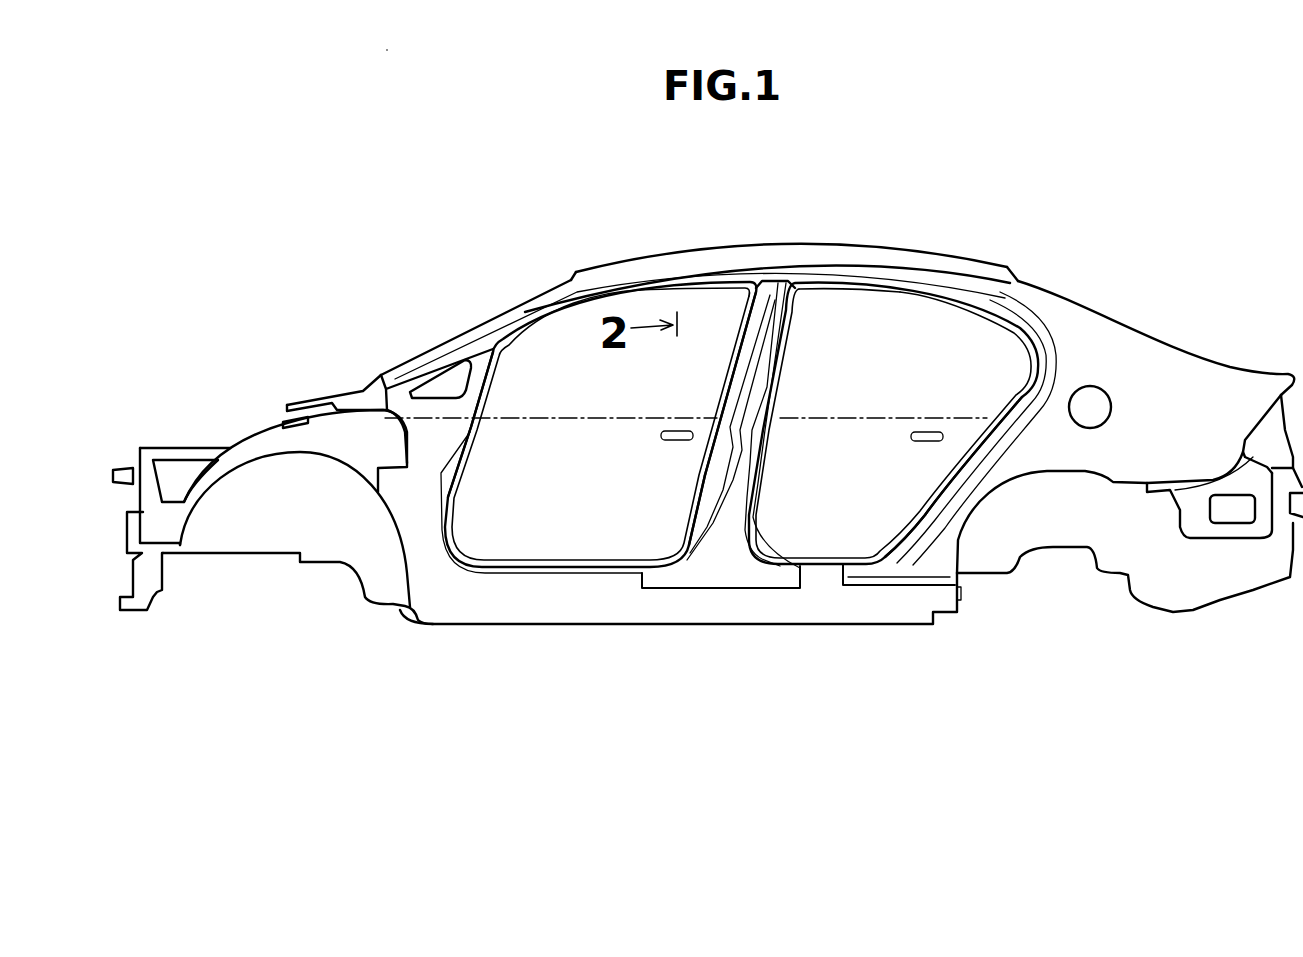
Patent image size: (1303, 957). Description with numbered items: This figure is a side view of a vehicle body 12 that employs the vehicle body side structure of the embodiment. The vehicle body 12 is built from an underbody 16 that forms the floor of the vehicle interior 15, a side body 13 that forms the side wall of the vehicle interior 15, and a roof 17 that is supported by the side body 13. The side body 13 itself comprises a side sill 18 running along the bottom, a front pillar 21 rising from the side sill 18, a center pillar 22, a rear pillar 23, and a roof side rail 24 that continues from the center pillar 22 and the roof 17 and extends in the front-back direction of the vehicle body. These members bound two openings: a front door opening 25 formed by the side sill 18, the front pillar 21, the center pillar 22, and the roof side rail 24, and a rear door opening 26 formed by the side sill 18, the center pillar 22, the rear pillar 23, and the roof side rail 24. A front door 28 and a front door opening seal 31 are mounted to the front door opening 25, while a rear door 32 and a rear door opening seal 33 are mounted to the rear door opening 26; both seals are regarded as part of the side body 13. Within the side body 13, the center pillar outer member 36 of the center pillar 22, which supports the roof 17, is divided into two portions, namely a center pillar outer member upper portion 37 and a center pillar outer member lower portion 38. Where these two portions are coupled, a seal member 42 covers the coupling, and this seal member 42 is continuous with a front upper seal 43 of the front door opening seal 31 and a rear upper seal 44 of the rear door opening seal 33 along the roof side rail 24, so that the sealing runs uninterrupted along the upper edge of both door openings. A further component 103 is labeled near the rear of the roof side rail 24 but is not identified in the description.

The vehicle body 12 is at (412, 350).
The front pillar 21 is at (473, 330).
The vehicle interior 15 is at (589, 328).
The roof side rail 24 is at (714, 248).
The seal member 42 is at (780, 260).
The center pillar outer member upper portion 37 is at (793, 270).
The roof 17 is at (860, 245).
The roof side rail rear portion 103 is at (933, 253).
The front upper seal 43 is at (707, 293).
The rear upper seal 44 is at (827, 292).
The center pillar outer member 36 is at (767, 345).
The center pillar outer member lower portion 38 is at (758, 382).
The side body 13 is at (628, 392).
The front door 28 is at (657, 418).
The rear door 32 is at (867, 418).
The rear pillar 23 is at (1017, 397).
The front door opening 25 is at (467, 468).
The center pillar 22 is at (690, 478).
The front door opening seal 31 is at (693, 513).
The rear door opening seal 33 is at (940, 478).
The rear door opening 26 is at (920, 507).
The side sill 18 is at (680, 613).
The underbody 16 is at (590, 682).